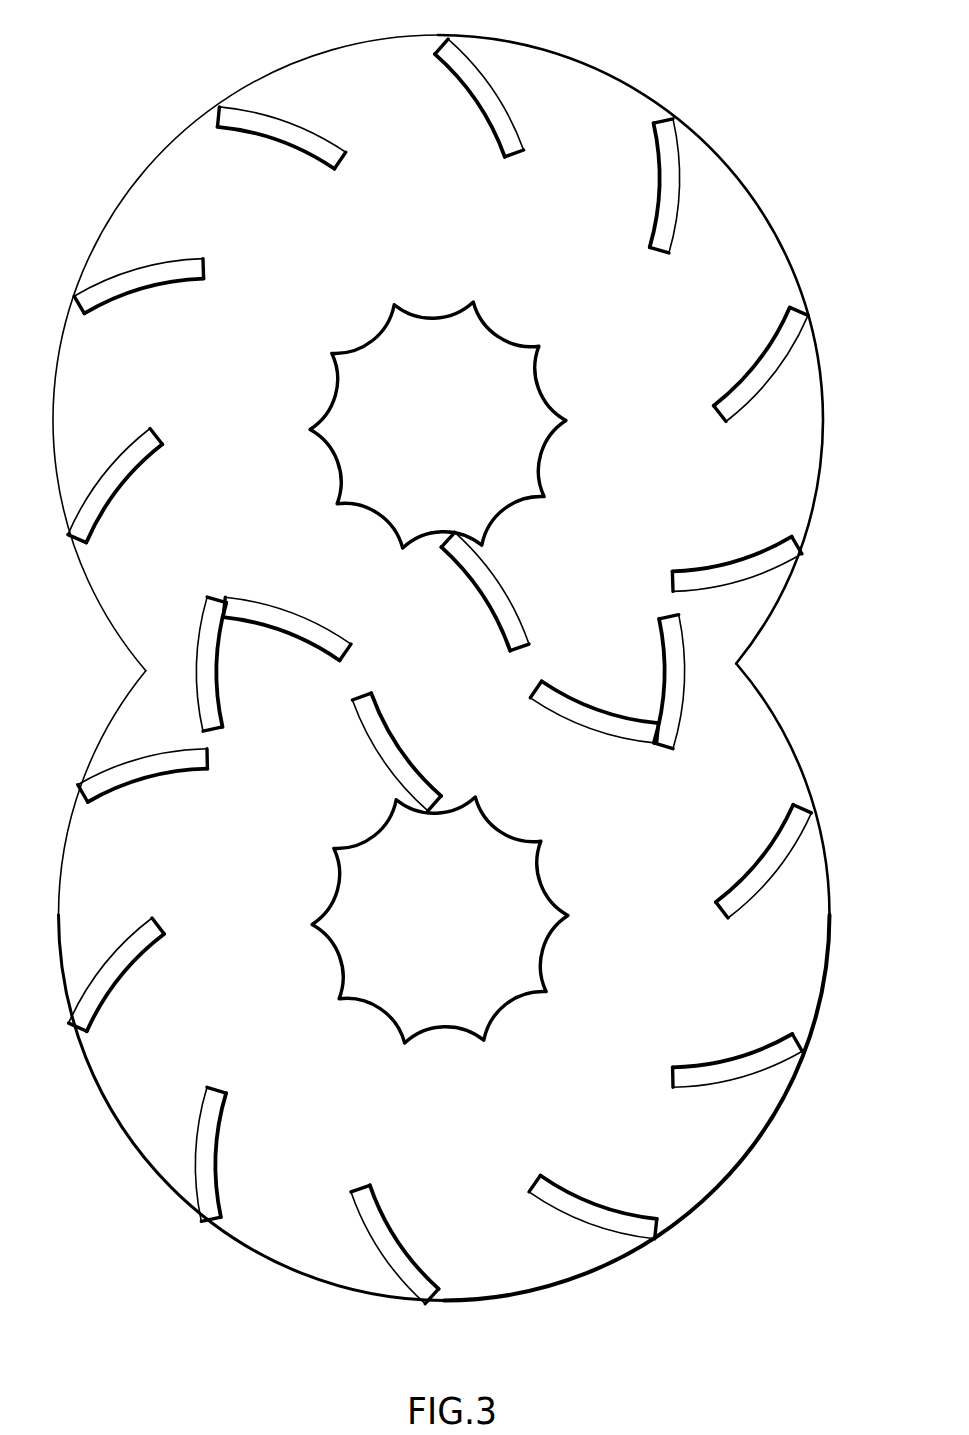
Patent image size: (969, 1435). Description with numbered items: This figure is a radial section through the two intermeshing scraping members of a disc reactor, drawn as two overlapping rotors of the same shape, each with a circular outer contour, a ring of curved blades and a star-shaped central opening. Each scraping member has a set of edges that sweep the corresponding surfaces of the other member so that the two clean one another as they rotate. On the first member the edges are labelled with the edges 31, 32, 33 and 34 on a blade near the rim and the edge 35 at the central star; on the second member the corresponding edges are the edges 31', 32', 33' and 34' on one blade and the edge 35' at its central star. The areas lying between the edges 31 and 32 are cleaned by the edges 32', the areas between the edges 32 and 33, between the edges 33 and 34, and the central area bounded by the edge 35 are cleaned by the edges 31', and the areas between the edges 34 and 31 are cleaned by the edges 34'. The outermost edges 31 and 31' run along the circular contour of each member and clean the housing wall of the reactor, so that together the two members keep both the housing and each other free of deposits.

The edge 31 is at (444, 1008).
The edge 32 is at (420, 1244).
The edge 33 is at (388, 1224).
The edge 34 is at (373, 1230).
The edge 35 is at (440, 942).
The edge 31' is at (438, 353).
The edge 32' is at (261, 139).
The edge 33' is at (287, 159).
The edge 34' is at (309, 147).
The edge 35' is at (438, 409).